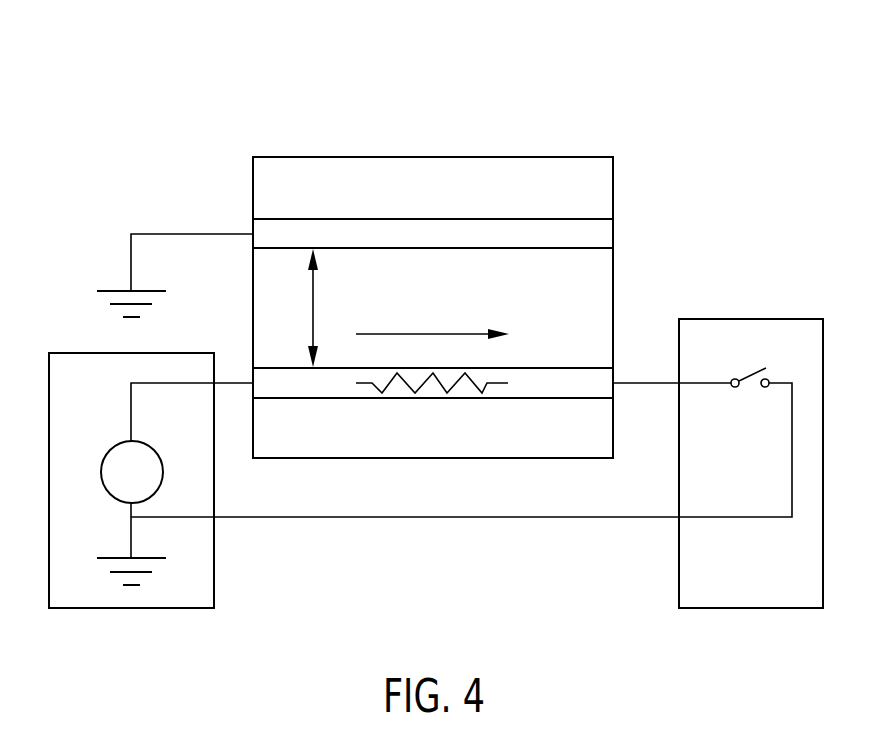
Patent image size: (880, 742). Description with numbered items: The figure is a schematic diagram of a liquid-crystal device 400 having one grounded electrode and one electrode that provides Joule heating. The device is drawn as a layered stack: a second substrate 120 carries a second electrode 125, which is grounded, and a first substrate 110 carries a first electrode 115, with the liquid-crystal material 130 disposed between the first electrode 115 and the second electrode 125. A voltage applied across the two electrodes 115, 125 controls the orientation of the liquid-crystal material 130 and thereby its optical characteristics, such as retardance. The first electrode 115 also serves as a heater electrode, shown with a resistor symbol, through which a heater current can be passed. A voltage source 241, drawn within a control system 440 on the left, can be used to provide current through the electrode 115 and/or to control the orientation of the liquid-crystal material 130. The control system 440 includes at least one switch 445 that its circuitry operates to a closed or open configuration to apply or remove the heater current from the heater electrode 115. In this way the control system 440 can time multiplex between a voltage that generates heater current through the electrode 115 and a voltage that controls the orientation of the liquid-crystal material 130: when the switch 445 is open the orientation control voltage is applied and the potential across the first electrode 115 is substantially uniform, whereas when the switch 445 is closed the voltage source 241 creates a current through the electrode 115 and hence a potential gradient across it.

The liquid-crystal device 400 is at (459, 102).
The second substrate 120 is at (547, 170).
The second electrode 125 is at (543, 237).
The liquid-crystal material 130 is at (597, 295).
The first electrode 115 is at (543, 380).
The first substrate 110 is at (578, 447).
The voltage source 241 is at (163, 470).
The control system 440 is at (78, 352).
The switch 445 is at (768, 377).